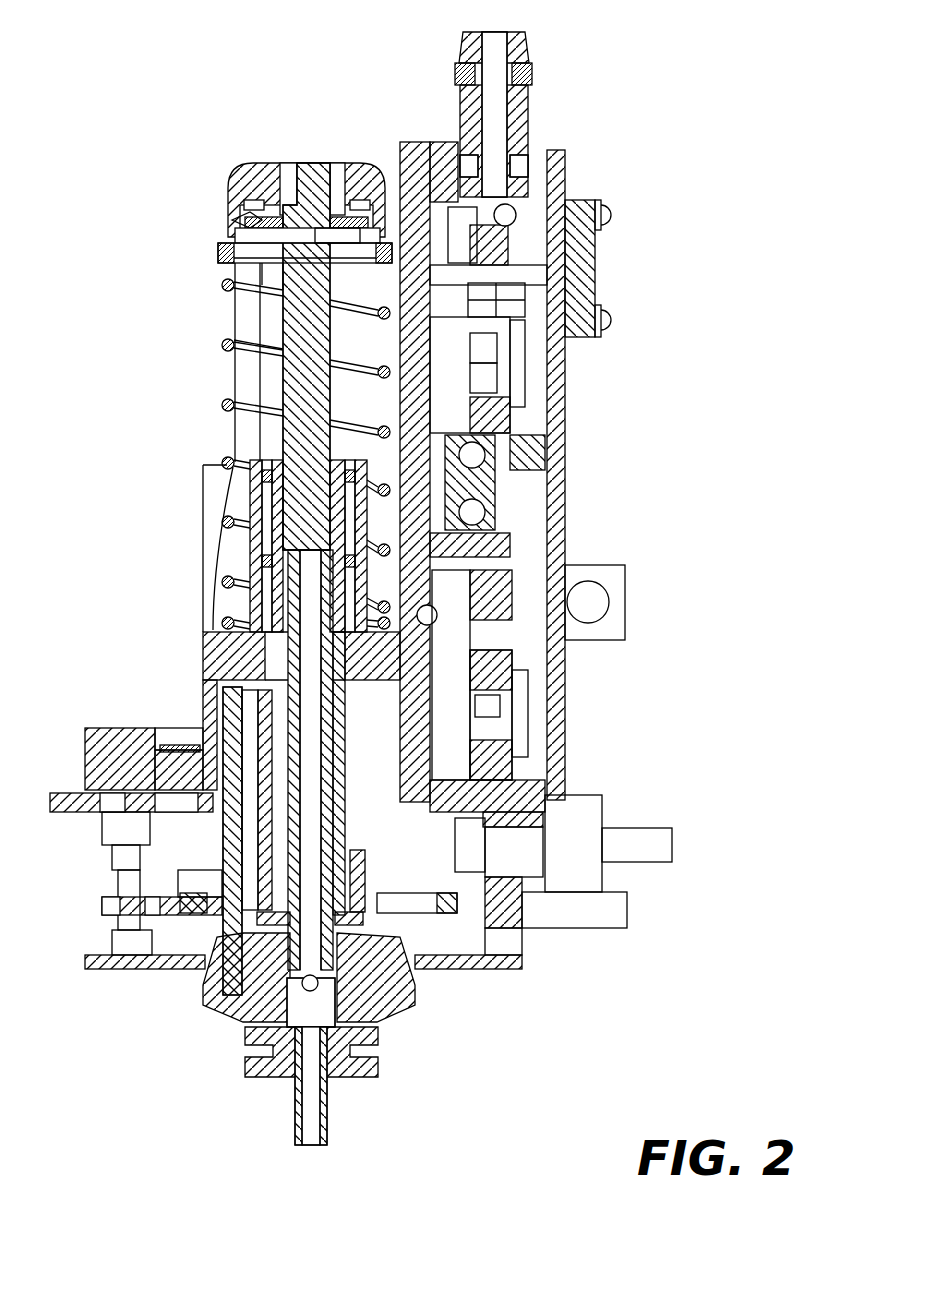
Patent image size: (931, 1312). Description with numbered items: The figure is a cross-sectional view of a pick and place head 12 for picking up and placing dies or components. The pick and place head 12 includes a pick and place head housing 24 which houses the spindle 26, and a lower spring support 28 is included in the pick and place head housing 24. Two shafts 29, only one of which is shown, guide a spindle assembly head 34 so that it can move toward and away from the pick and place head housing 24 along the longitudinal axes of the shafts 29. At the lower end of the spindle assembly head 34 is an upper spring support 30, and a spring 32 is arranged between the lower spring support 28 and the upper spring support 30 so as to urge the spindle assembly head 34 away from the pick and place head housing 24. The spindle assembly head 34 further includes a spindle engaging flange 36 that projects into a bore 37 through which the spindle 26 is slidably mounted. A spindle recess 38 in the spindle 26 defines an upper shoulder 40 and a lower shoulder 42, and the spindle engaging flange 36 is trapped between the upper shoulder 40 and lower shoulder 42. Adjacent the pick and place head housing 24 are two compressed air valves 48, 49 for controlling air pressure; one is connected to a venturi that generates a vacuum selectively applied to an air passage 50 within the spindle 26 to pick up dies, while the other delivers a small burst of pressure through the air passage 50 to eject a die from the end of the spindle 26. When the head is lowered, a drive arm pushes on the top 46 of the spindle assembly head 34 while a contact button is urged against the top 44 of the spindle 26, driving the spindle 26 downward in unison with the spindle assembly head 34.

The pick and place head 12 is at (700, 570).
The pick and place head housing 24 is at (207, 657).
The spindle 26 is at (280, 382).
The lower spring support 28 is at (247, 507).
The shafts 29 is at (238, 365).
The upper spring support 30 is at (235, 238).
The spring 32 is at (245, 413).
The spindle assembly head 34 is at (357, 163).
The spindle engaging flange 36 is at (230, 225).
The bore 37 is at (288, 177).
The spindle recess 38 is at (262, 268).
The upper shoulder 40 is at (217, 256).
The lower shoulder 42 is at (283, 278).
The top of the spindle 44 is at (303, 163).
The top of the spindle assembly head 46 is at (268, 163).
The compressed air valve 48 is at (543, 420).
The compressed air valve 49 is at (528, 738).
The air passage 50 is at (288, 665).